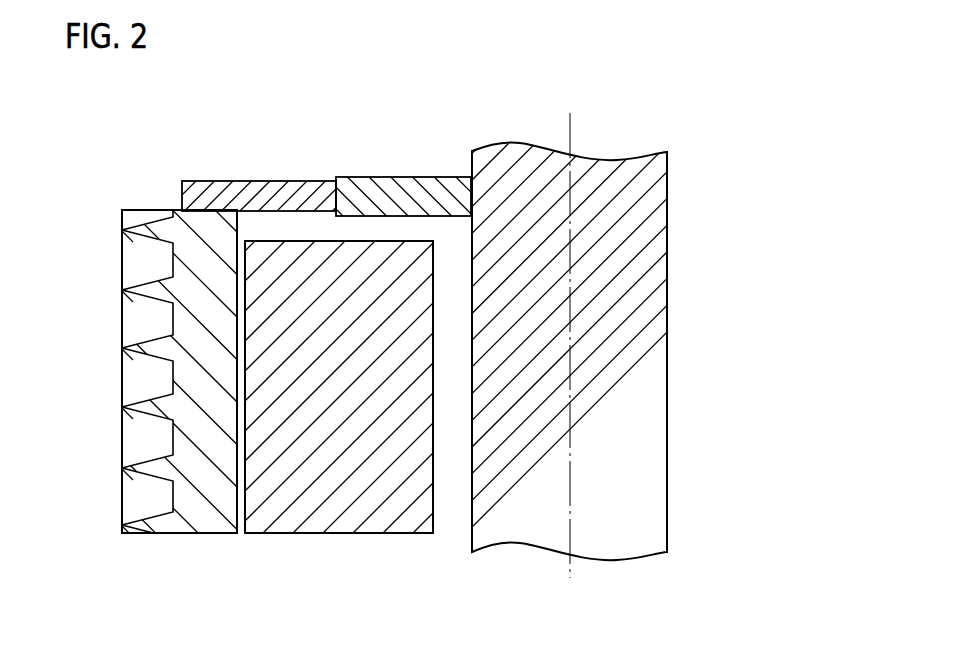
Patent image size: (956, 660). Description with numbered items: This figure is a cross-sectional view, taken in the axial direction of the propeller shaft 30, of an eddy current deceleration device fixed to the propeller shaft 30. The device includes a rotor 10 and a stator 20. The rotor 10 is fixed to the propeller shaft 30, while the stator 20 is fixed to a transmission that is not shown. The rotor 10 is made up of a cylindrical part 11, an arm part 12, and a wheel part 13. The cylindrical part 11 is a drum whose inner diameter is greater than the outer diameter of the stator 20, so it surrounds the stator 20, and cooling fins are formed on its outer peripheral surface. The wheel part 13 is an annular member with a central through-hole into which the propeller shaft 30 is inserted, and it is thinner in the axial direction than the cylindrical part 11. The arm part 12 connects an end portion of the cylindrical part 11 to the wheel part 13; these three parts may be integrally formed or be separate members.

The rotor 10 is at (138, 150).
The cylindrical part 11 is at (155, 209).
The arm part 12 is at (293, 182).
The wheel part 13 is at (400, 180).
The stator 20 is at (390, 535).
The propeller shaft 30 is at (482, 149).